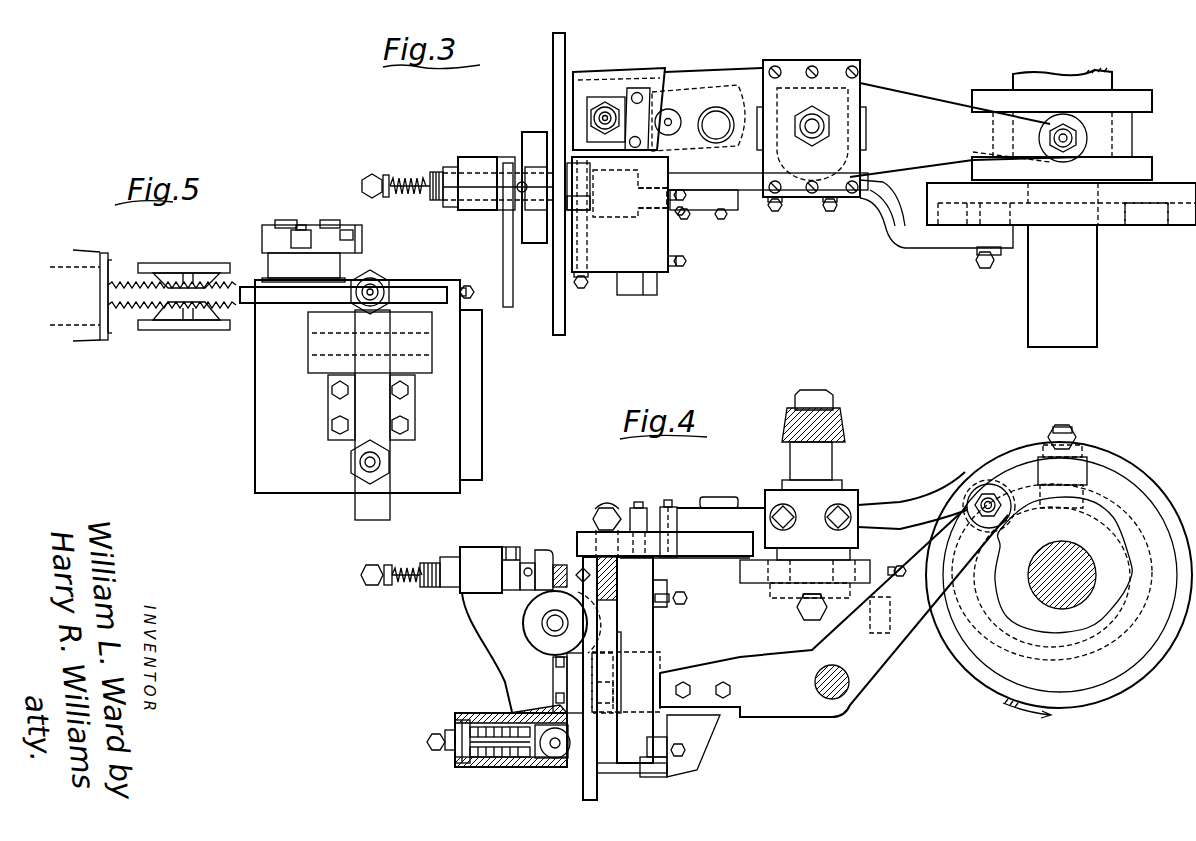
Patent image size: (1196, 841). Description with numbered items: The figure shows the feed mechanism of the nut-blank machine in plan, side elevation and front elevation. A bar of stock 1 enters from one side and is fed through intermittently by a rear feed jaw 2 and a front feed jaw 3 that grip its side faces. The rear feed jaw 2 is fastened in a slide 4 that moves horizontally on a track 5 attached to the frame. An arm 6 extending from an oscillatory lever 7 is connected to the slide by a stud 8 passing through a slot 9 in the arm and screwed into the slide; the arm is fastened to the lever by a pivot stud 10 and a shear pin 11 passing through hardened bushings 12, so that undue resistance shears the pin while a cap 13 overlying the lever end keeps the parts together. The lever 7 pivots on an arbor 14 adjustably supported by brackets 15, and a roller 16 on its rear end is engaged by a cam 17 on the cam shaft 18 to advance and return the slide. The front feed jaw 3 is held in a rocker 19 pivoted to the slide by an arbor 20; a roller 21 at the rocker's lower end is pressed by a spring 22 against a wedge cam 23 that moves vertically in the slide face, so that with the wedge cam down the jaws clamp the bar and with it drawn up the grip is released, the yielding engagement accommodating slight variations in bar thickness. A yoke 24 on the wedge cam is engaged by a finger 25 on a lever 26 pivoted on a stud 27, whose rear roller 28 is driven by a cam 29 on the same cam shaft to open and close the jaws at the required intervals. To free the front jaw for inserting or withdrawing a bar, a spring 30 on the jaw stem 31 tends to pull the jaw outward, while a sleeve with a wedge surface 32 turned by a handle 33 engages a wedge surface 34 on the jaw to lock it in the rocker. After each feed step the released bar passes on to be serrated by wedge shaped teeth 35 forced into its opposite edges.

In FIG. 3, the bar of stock 1 is at (547, 58).
In FIG. 5, the bar of stock 1 is at (246, 307).
In FIG. 3, the rear feed jaw 2 is at (570, 180).
In FIG. 4, the rear feed jaw 2 is at (563, 563).
In FIG. 3, the front feed jaw 3 is at (543, 157).
In FIG. 4, the front feed jaw 3 is at (547, 552).
In FIG. 3, the slide 4 is at (620, 214).
In FIG. 5, the slide 4 is at (357, 386).
In FIG. 4, the slide 4 is at (590, 678).
In FIG. 3, the track 5 is at (637, 283).
In FIG. 5, the track 5 is at (471, 395).
In FIG. 4, the track 5 is at (642, 660).
In FIG. 3, the arm 6 is at (611, 86).
In FIG. 5, the arm 6 is at (304, 265).
In FIG. 4, the arm 6 is at (665, 544).
In FIG. 3, the oscillatory lever 7 is at (867, 158).
In FIG. 5, the oscillatory lever 7 is at (362, 238).
In FIG. 4, the oscillatory lever 7 is at (760, 508).
In FIG. 3, the stud 8 is at (600, 97).
In FIG. 4, the stud 8 is at (606, 506).
In FIG. 3, the slot 9 is at (587, 99).
In FIG. 4, the slot 9 is at (595, 508).
In FIG. 3, the pivot stud 10 is at (716, 125).
In FIG. 4, the pivot stud 10 is at (713, 497).
In FIG. 3, the shear pin 11 is at (675, 107).
In FIG. 5, the shear pin 11 is at (303, 222).
In FIG. 4, the shear pin 11 is at (668, 500).
In FIG. 3, the hardened bushings 12 is at (674, 132).
In FIG. 5, the hardened bushings 12 is at (290, 222).
In FIG. 4, the hardened bushings 12 is at (679, 520).
In FIG. 3, the cap 13 is at (636, 92).
In FIG. 5, the cap 13 is at (328, 226).
In FIG. 4, the cap 13 is at (637, 506).
In FIG. 3, the arbor 14 is at (830, 122).
In FIG. 4, the arbor 14 is at (812, 466).
In FIG. 3, the brackets 15 is at (811, 135).
In FIG. 4, the brackets 15 is at (838, 428).
In FIG. 3, the roller 16 is at (1043, 137).
In FIG. 4, the roller 16 is at (1087, 494).
In FIG. 3, the cam 17 is at (1140, 154).
In FIG. 4, the cam 17 is at (1138, 522).
In FIG. 3, the cam shaft 18 is at (1062, 286).
In FIG. 4, the cam shaft 18 is at (1041, 557).
In FIG. 3, the rocker 19 is at (483, 207).
In FIG. 5, the rocker 19 is at (371, 415).
In FIG. 4, the rocker 19 is at (475, 642).
In FIG. 5, the arbor 20 is at (308, 348).
In FIG. 4, the arbor 20 is at (543, 628).
In FIG. 4, the roller 21 is at (562, 758).
In FIG. 4, the spring 22 is at (491, 767).
In FIG. 3, the wedge cam 23 is at (578, 200).
In FIG. 4, the wedge cam 23 is at (578, 748).
In FIG. 3, the yoke 24 is at (601, 188).
In FIG. 4, the yoke 24 is at (613, 677).
In FIG. 3, the finger 25 is at (630, 218).
In FIG. 4, the finger 25 is at (660, 680).
In FIG. 4, the lever 26 is at (834, 612).
In FIG. 4, the stud 27 is at (833, 700).
In FIG. 3, the roller 28 is at (1013, 212).
In FIG. 4, the roller 28 is at (972, 523).
In FIG. 3, the cam 29 is at (1131, 225).
In FIG. 4, the cam 29 is at (970, 653).
In FIG. 3, the spring 30 is at (404, 180).
In FIG. 4, the spring 30 is at (403, 581).
In FIG. 3, the stem 31 is at (373, 175).
In FIG. 5, the stem 31 is at (378, 288).
In FIG. 4, the stem 31 is at (361, 573).
In FIG. 3, the sleeve with wedge surface 32 is at (520, 175).
In FIG. 4, the sleeve with wedge surface 32 is at (520, 550).
In FIG. 3, the handle 33 is at (503, 251).
In FIG. 4, the handle 33 is at (508, 590).
In FIG. 3, the wedge surface 34 is at (527, 207).
In FIG. 4, the wedge surface 34 is at (526, 590).
In FIG. 5, the wedge shaped teeth 35 is at (186, 282).